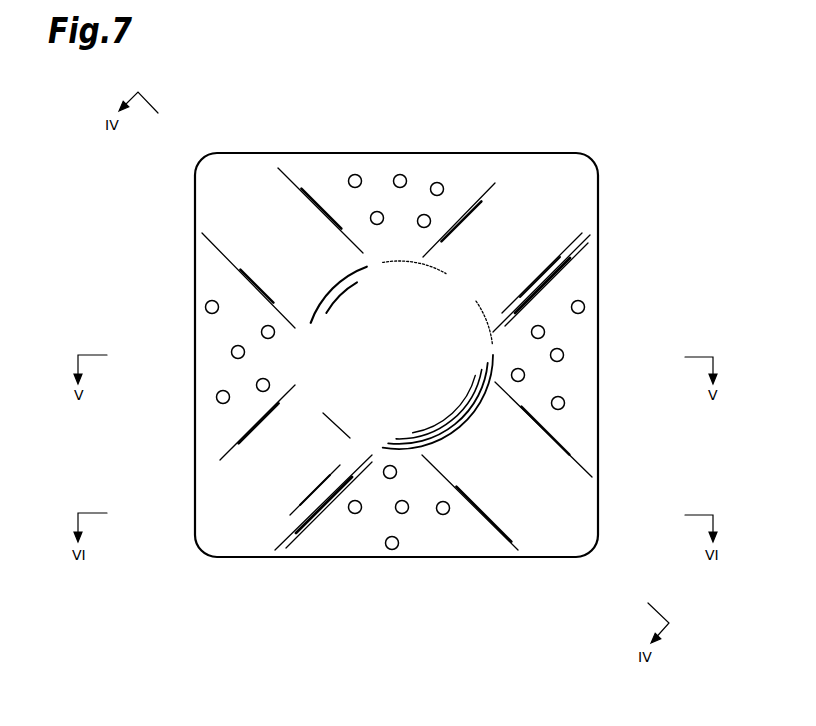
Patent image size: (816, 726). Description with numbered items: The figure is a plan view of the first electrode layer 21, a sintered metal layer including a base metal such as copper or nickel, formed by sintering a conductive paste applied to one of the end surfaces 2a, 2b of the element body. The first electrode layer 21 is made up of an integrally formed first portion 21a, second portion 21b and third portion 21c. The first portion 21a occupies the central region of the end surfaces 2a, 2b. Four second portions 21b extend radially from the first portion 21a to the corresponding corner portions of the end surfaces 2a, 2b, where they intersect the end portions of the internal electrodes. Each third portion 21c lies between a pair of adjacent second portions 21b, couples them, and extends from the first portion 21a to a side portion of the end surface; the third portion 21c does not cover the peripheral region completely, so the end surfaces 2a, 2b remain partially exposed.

The first electrode layer 21 is at (602, 178).
The first portion 21a is at (417, 368).
The second portion 21b is at (288, 213).
The third portion 21c is at (403, 177).
The end surface 2a is at (460, 554).
The end surface 2b is at (445, 514).